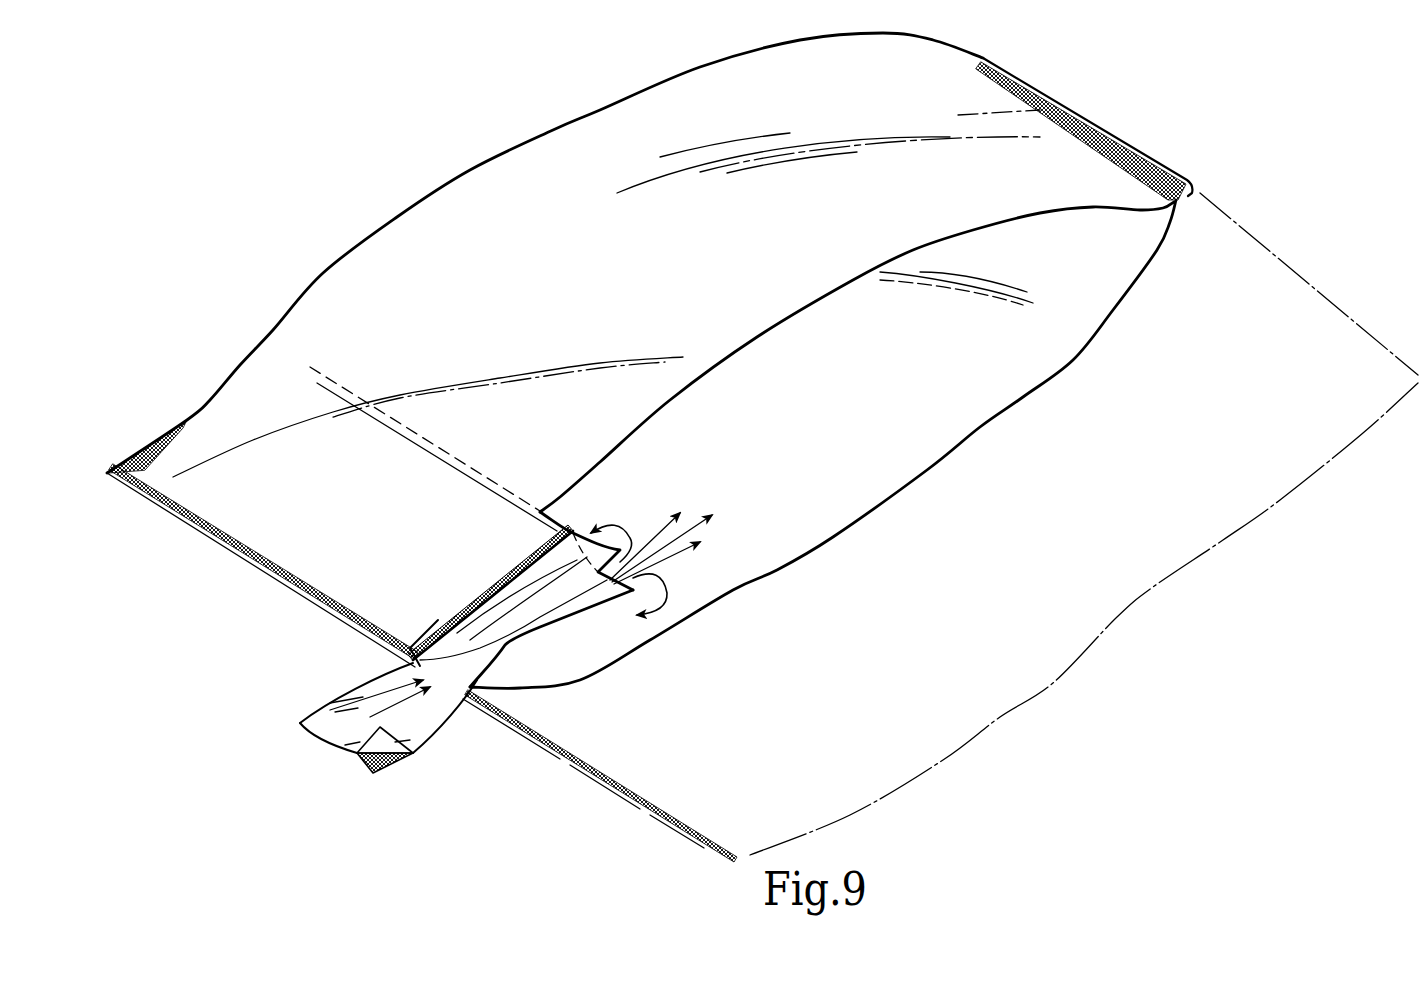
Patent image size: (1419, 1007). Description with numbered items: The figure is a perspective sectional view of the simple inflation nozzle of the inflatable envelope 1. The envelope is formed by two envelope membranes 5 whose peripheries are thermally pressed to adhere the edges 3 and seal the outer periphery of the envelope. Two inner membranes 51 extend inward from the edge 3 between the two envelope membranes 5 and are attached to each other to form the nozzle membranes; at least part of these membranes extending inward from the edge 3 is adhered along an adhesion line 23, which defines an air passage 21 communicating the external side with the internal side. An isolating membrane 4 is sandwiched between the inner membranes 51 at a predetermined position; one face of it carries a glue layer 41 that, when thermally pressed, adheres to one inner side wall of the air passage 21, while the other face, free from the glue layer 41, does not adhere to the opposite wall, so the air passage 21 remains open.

The inflatable envelope 1 is at (415, 238).
The edge 3 is at (300, 593).
The envelope membrane 5 is at (833, 537).
The inner membrane 51 is at (473, 477).
The air passage 21 is at (545, 620).
The adhesion line 23 is at (477, 597).
The isolating membrane 4 is at (327, 723).
The glue layer 41 is at (373, 770).